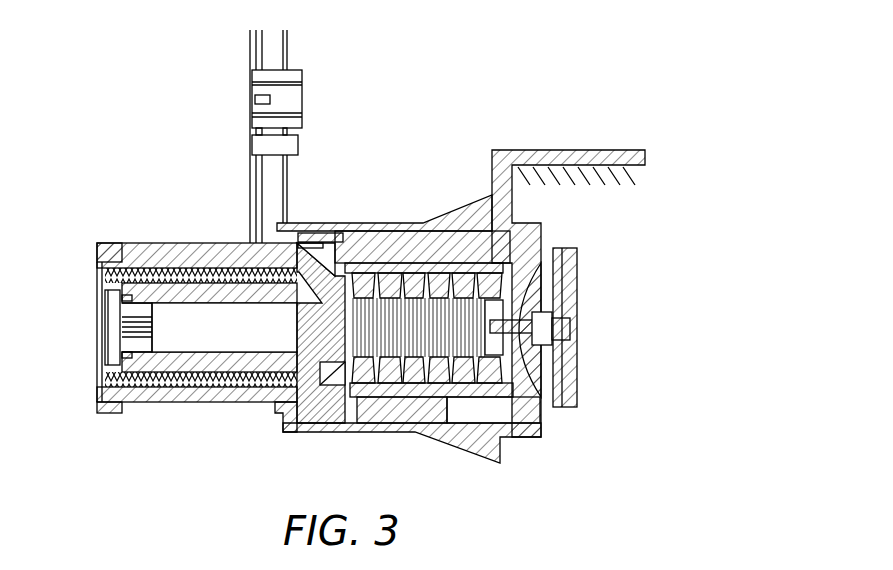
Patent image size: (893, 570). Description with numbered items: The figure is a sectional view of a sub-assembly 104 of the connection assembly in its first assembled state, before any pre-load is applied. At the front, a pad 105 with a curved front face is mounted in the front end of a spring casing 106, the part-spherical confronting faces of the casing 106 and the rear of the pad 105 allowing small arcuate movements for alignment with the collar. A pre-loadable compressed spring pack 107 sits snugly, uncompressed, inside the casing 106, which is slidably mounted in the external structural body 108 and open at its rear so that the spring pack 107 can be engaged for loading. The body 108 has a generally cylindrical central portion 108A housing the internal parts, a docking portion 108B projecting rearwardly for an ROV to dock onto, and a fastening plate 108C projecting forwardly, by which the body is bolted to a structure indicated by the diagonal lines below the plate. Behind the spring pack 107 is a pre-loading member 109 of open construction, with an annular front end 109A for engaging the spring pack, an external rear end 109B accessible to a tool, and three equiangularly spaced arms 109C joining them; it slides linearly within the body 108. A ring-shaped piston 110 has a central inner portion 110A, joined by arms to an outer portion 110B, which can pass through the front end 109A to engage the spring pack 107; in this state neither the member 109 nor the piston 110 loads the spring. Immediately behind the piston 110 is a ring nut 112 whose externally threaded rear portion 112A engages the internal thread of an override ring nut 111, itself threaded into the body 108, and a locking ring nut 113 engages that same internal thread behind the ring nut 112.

The sub-assembly 104 is at (493, 82).
The pad 105 is at (575, 262).
The spring casing 106 is at (520, 387).
The pre-loadable compressed spring pack 107 is at (390, 373).
The external structural body 108 is at (457, 445).
The central portion 108A is at (296, 432).
The docking portion 108B is at (300, 97).
The fastening plate 108C is at (607, 148).
The pre-loading member 109 is at (157, 250).
The annular front end 109A is at (333, 282).
The external rear end 109B is at (110, 408).
The arms 109C is at (219, 250).
The piston 110 is at (323, 387).
The central inner portion 110A is at (305, 327).
The outer portion 110B is at (312, 237).
The override ring nut 111 is at (257, 385).
The ring nut 112 is at (207, 363).
The externally threaded rear portion 112A is at (157, 377).
The locking ring nut 113 is at (110, 303).